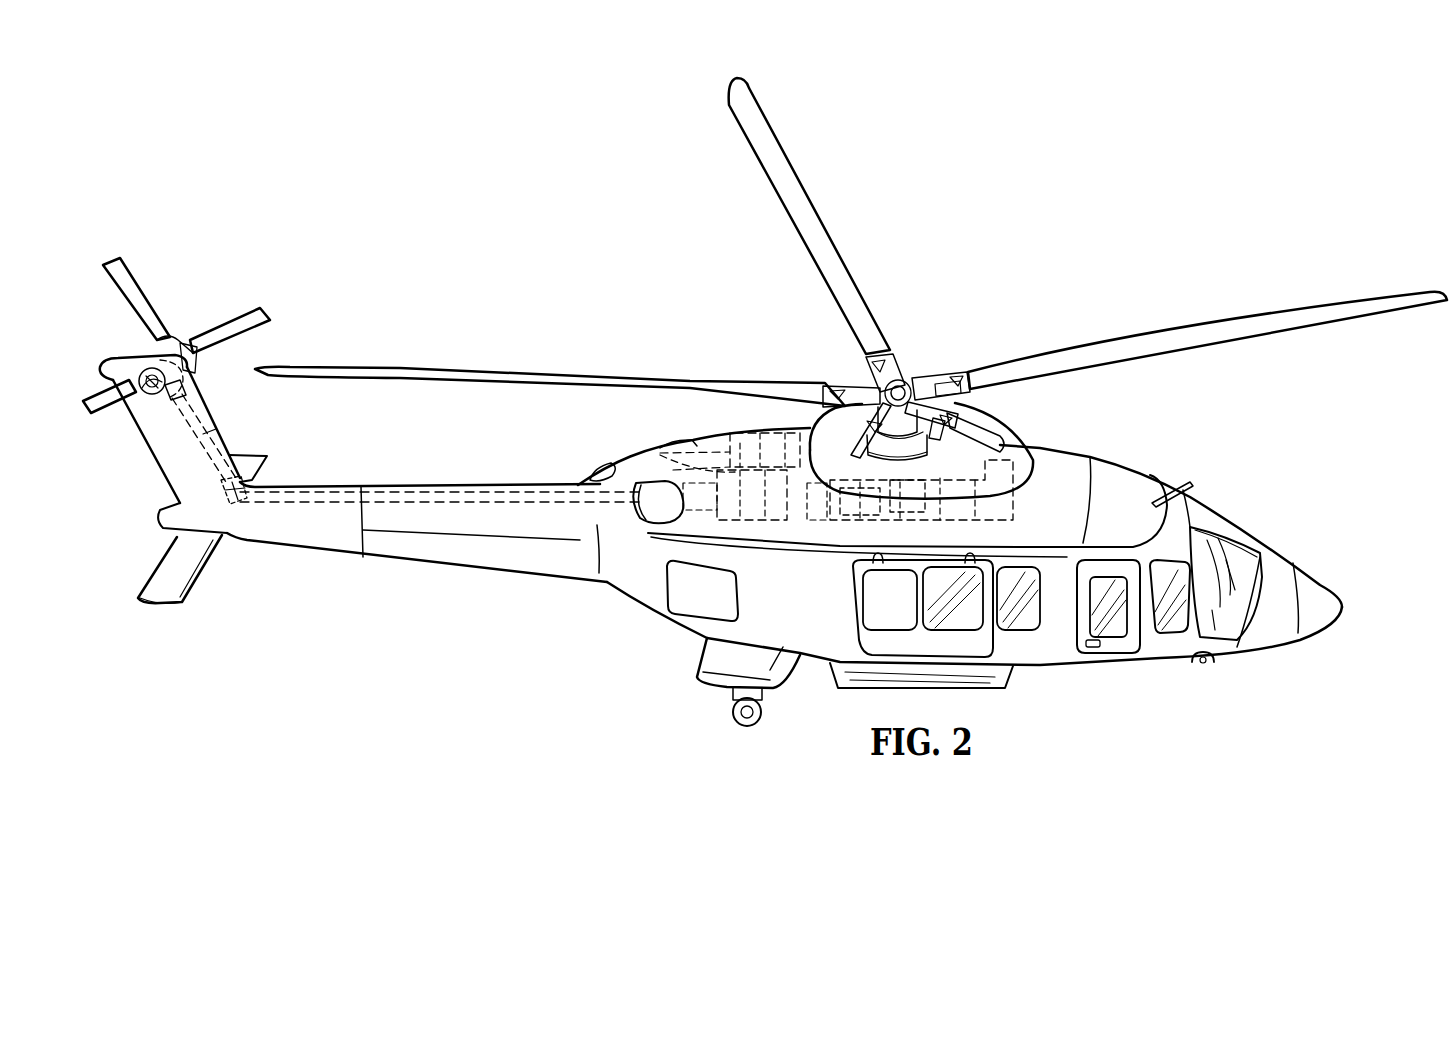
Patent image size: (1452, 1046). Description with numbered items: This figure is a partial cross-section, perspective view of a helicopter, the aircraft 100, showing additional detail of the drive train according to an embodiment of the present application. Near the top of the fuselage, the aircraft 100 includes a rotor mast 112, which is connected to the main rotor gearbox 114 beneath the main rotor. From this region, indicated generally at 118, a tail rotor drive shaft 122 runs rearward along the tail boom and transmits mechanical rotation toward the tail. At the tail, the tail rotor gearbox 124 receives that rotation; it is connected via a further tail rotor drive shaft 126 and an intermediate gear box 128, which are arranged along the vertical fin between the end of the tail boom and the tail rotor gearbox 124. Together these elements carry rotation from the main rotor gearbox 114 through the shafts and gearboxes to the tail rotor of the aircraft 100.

The aircraft 100 is at (1131, 129).
The rotor mast 112 is at (873, 488).
The main rotor gearbox 114 is at (906, 486).
The drive system 118 is at (787, 432).
The tail rotor drive shaft 122 is at (450, 492).
The tail rotor gearbox 124 is at (145, 355).
The tail rotor drive shaft 126 is at (217, 438).
The intermediate gear box 128 is at (228, 507).